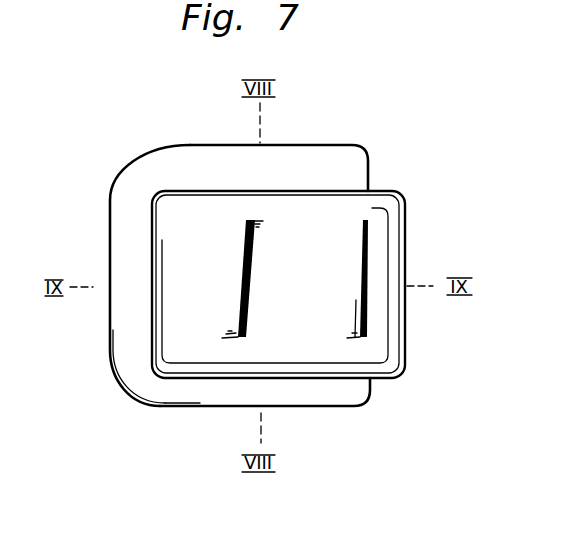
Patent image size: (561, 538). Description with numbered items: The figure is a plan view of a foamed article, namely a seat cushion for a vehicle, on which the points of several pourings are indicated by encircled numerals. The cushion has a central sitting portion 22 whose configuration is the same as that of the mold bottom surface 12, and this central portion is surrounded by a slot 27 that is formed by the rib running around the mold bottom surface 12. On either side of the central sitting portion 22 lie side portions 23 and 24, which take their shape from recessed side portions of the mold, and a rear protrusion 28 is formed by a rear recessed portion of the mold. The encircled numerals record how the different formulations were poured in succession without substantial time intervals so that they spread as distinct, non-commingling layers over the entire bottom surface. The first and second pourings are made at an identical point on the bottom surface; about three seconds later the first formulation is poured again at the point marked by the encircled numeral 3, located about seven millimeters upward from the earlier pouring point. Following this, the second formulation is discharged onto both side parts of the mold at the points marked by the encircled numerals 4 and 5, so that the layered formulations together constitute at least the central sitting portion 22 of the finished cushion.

The encircled numeral indicating third pouring point 3 is at (153, 286).
The encircled numeral indicating fourth pouring point 4 is at (184, 393).
The encircled numeral indicating fifth pouring point 5 is at (178, 173).
The inclined bottom surface 12 is at (174, 285).
The central sitting portion 22 is at (306, 292).
The side portion 23 is at (326, 158).
The side portion 24 is at (333, 405).
The slot 27 is at (152, 237).
The rear protrusion 28 is at (118, 199).